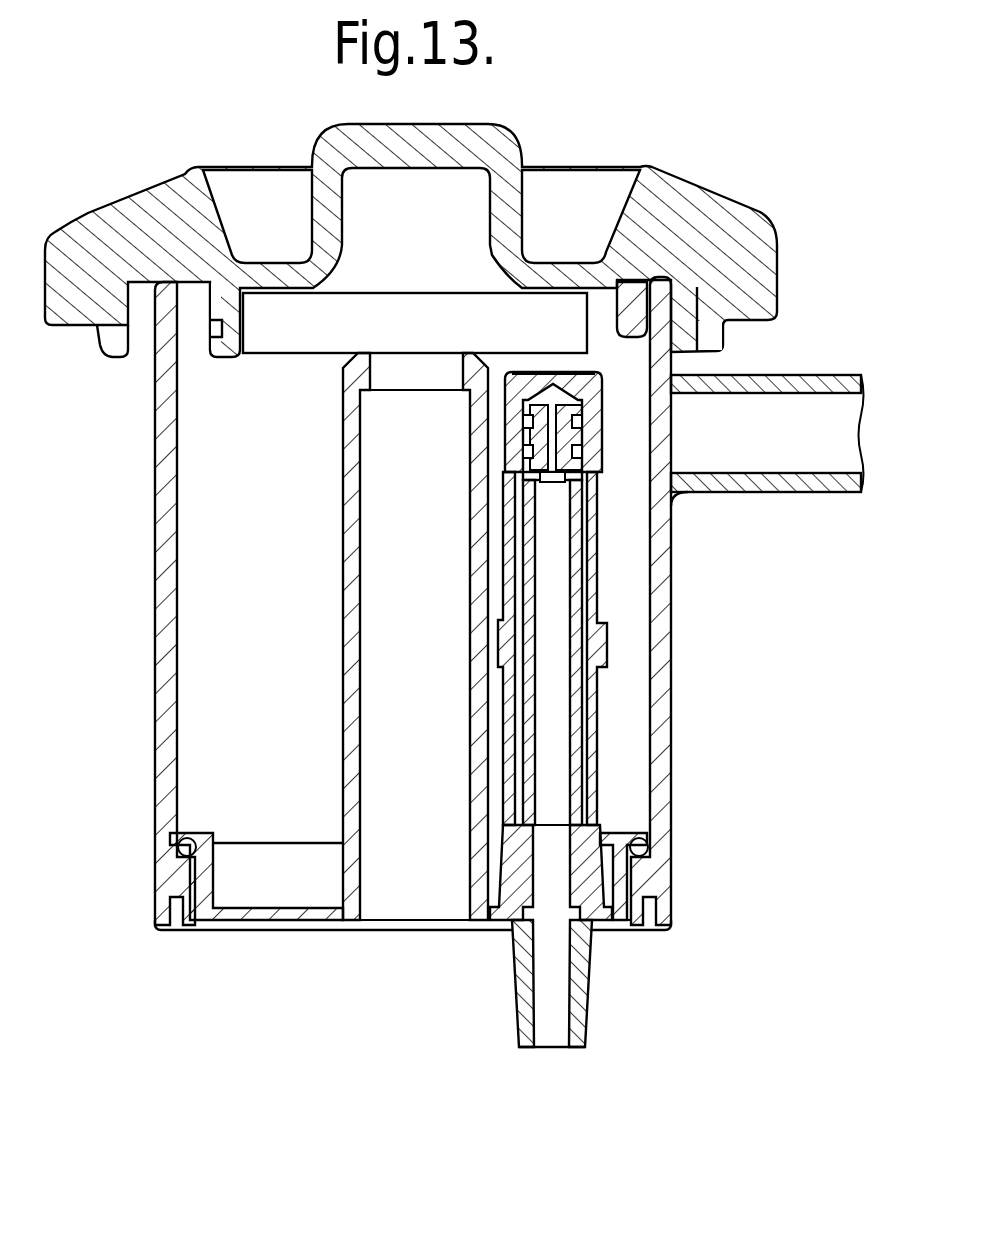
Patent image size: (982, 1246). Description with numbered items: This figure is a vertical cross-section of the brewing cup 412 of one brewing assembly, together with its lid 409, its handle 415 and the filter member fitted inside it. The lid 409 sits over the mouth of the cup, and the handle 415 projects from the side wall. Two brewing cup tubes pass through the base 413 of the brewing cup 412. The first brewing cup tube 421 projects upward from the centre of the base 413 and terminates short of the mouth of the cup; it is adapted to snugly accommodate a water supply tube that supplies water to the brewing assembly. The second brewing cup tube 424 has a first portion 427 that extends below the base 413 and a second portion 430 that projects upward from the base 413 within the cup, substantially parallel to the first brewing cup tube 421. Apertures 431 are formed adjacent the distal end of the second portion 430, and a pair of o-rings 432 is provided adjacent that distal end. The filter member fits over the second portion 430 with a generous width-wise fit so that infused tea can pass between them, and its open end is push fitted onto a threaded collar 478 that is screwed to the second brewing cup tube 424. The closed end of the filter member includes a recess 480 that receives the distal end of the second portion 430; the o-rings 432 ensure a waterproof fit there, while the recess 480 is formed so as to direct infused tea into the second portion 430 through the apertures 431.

The lid 409 is at (680, 212).
The brewing cup 412 is at (154, 407).
The base 413 is at (276, 912).
The handle 415 is at (822, 408).
The first brewing cup tube 421 is at (478, 353).
The second brewing cup tube 424 is at (594, 610).
The first portion 427 is at (530, 1047).
The second portion 430 is at (596, 711).
The apertures 431 is at (535, 485).
The o-rings 432 is at (603, 456).
The threaded collar 478 is at (596, 803).
The recess 480 is at (605, 374).